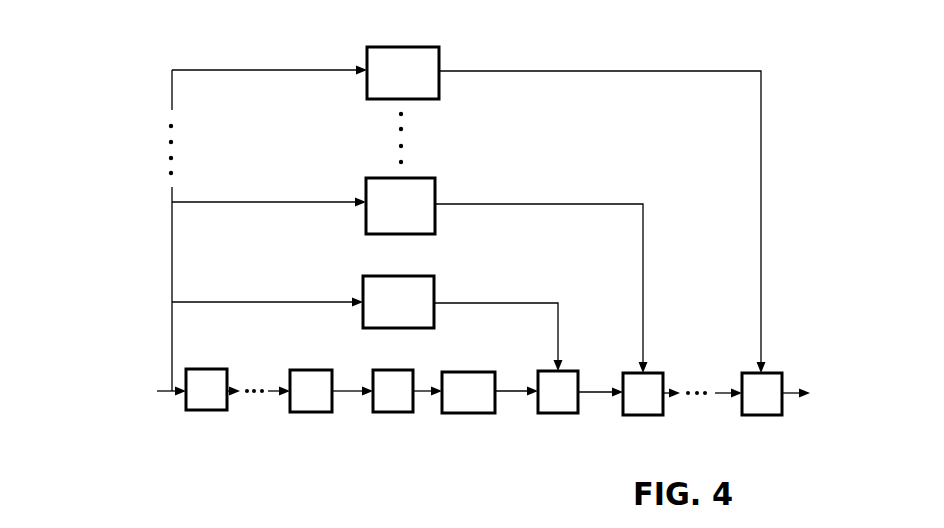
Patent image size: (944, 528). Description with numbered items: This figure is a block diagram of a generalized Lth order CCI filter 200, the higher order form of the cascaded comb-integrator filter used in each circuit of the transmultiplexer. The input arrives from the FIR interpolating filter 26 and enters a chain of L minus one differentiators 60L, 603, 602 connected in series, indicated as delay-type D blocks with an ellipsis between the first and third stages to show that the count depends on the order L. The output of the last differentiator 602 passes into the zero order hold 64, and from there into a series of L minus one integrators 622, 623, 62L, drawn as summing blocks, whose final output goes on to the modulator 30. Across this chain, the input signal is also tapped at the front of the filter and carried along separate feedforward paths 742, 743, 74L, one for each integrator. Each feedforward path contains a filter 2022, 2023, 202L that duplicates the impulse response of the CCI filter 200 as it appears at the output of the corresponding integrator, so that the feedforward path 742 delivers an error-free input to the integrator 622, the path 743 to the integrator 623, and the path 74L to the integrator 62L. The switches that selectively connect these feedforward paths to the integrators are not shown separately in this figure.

The Lth order CCI filter 200 is at (126, 79).
The FIR interpolating filter 26 is at (109, 393).
The modulator 30 is at (839, 395).
The filter 202L is at (441, 48).
The filter 2023 is at (437, 182).
The filter 2022 is at (436, 290).
The feedforward path 74L is at (604, 63).
The feedforward path 743 is at (566, 203).
The feedforward path 742 is at (528, 302).
The differentiator 60L is at (207, 411).
The differentiator 603 is at (310, 413).
The differentiator 602 is at (392, 413).
The zero order hold 64 is at (466, 414).
The integrator 622 is at (558, 414).
The integrator 623 is at (645, 416).
The integrator 62L is at (758, 416).